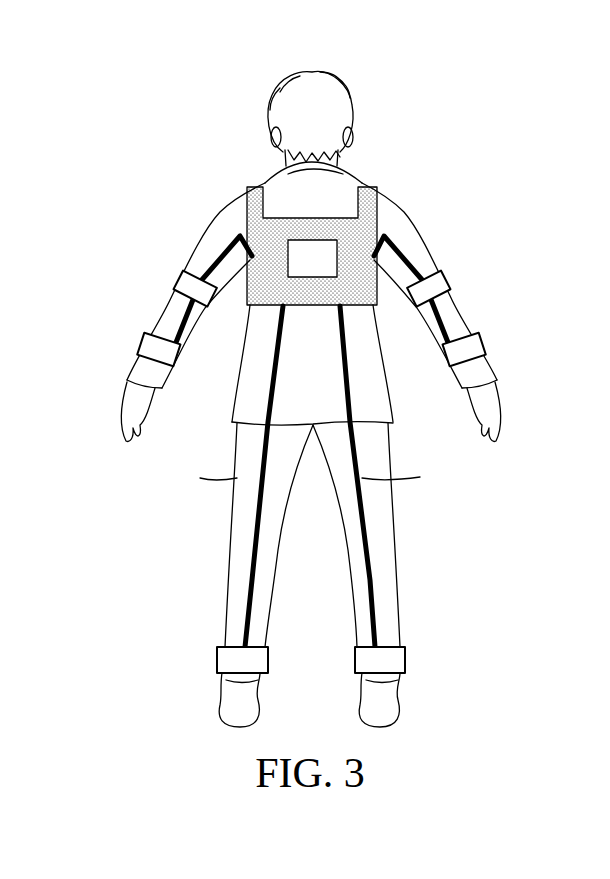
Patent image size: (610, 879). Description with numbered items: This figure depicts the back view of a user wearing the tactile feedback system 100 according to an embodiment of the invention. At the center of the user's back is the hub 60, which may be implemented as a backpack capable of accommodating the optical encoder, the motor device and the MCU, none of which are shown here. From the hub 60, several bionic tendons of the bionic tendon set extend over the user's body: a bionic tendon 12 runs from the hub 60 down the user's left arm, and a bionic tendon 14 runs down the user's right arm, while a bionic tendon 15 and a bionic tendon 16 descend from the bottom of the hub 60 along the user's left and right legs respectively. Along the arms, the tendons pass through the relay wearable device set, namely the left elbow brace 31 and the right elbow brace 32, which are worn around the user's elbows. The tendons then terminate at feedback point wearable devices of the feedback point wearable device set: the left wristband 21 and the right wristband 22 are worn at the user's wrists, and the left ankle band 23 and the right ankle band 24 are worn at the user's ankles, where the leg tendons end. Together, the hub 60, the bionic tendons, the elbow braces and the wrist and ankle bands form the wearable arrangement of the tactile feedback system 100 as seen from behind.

The tactile feedback system 100 is at (453, 117).
The hub 60 is at (328, 272).
The bionic tendon 12 is at (224, 255).
The bionic tendon 14 is at (400, 255).
The bionic tendon 15 is at (237, 478).
The bionic tendon 16 is at (362, 478).
The left wristband 21 is at (140, 338).
The right wristband 22 is at (482, 338).
The left ankle band 23 is at (217, 662).
The right ankle band 24 is at (405, 662).
The left elbow brace 31 is at (172, 278).
The right elbow brace 32 is at (453, 278).